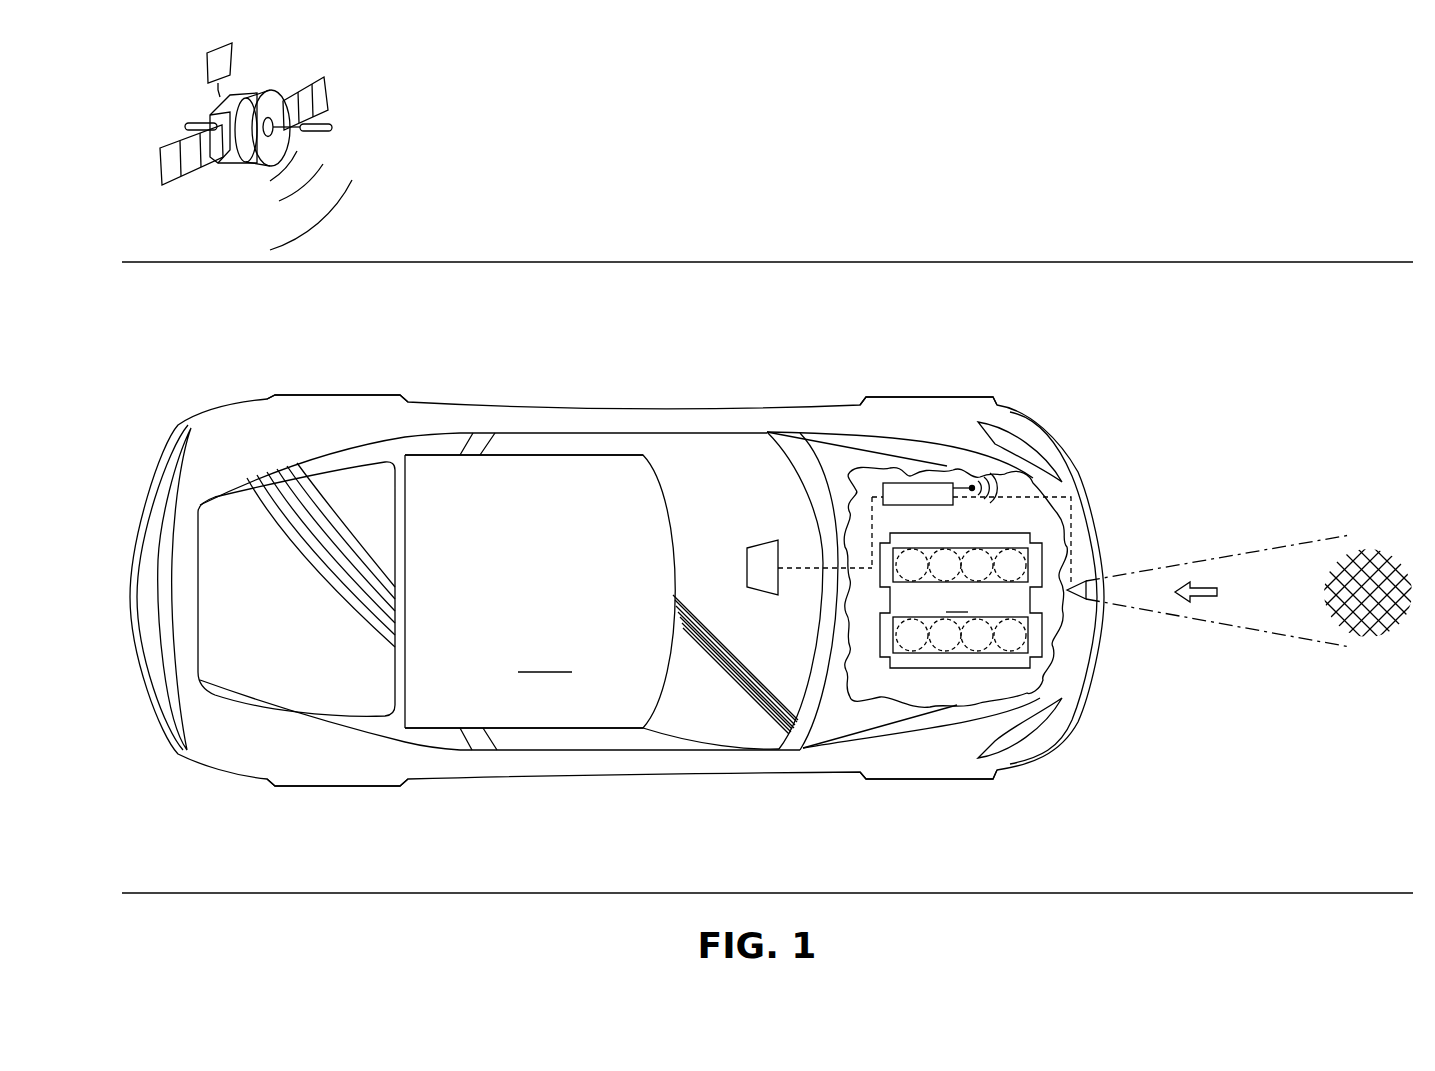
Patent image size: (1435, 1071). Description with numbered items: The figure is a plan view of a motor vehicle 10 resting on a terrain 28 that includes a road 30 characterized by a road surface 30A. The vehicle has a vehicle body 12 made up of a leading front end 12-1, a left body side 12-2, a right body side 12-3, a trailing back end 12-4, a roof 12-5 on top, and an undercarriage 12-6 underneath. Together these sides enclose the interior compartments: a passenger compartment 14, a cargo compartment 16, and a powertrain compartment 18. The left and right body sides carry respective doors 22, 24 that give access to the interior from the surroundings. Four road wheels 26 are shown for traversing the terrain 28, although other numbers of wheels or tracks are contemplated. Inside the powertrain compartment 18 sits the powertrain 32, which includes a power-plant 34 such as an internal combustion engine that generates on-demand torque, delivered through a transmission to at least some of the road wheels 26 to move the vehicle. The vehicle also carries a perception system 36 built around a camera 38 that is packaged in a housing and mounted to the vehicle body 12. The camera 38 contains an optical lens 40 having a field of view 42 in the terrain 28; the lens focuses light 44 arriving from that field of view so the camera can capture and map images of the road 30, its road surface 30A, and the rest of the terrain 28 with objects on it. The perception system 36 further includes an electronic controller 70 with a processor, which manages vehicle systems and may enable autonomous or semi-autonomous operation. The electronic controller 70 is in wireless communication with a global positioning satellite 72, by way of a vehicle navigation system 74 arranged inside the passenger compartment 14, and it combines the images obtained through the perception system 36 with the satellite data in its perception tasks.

The motor vehicle 10 is at (1032, 790).
The vehicle body 12 is at (573, 477).
The front end 12-1 is at (1082, 492).
The left body side 12-2 is at (500, 401).
The right body side 12-3 is at (507, 782).
The back end 12-4 is at (142, 692).
The roof 12-5 is at (540, 591).
The undercarriage 12-6 is at (270, 730).
The passenger compartment 14 is at (764, 451).
The cargo compartment 16 is at (243, 518).
The powertrain compartment 18 is at (965, 685).
The door 22 is at (528, 432).
The door 24 is at (524, 456).
The road wheels 26 is at (391, 394).
The terrain 28 is at (1372, 256).
The road 30 is at (1077, 299).
The road surface 30A is at (1404, 627).
The powertrain 32 is at (1050, 567).
The power-plant 34 is at (961, 600).
The perception system 36 is at (1033, 477).
The camera 38 is at (1087, 606).
The optical lens 40 is at (1090, 580).
The field of view 42 is at (1300, 643).
The light 44 is at (1205, 585).
The electronic controller 70 is at (913, 482).
The global positioning satellite 72 is at (327, 92).
The vehicle navigation system 74 is at (762, 573).